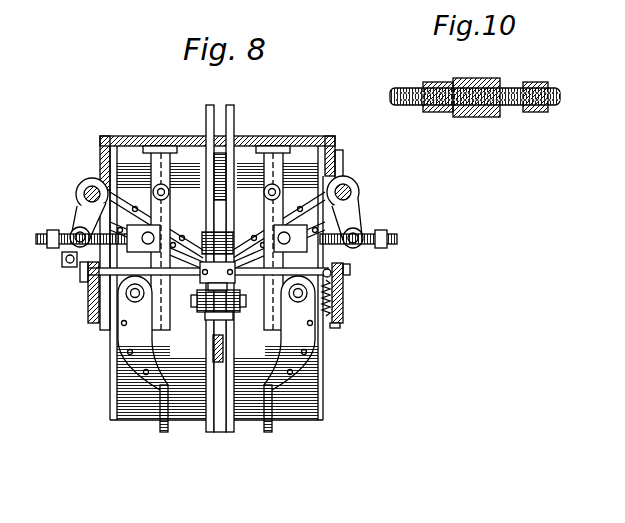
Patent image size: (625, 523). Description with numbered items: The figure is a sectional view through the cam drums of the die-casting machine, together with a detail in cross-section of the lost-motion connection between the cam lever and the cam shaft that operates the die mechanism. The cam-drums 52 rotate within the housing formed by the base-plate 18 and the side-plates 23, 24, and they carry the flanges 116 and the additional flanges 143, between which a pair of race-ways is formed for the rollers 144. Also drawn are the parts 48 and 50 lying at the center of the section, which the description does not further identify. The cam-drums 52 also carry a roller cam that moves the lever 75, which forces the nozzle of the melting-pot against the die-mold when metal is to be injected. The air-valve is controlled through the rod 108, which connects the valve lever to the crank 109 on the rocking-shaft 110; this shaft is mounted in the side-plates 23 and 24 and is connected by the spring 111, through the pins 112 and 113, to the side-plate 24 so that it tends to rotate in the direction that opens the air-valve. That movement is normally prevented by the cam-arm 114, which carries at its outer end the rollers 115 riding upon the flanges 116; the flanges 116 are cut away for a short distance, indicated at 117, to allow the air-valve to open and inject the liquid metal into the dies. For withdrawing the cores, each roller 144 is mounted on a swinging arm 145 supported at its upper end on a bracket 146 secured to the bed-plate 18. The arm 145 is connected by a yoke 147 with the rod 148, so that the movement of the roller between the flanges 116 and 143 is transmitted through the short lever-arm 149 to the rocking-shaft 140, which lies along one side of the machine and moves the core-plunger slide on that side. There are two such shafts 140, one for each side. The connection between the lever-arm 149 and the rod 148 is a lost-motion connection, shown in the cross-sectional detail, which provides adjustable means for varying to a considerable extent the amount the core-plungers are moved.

In FIG. 8, the base-plate 18 is at (334, 139).
In FIG. 8, the side-plate 23 is at (88, 315).
In FIG. 8, the side-plate 24 is at (341, 312).
In FIG. 8, the nut bracket 48 is at (240, 258).
In FIG. 8, the rods 50 is at (206, 112).
In FIG. 8, the cam-drum 52 is at (117, 388).
In FIG. 8, the lever 75 is at (211, 343).
In FIG. 8, the rod 108 is at (63, 262).
In FIG. 8, the crank 109 is at (82, 273).
In FIG. 8, the rocking-shaft 110 is at (346, 273).
In FIG. 8, the spring 111 is at (334, 292).
In FIG. 8, the pin 112 is at (344, 268).
In FIG. 8, the pin 113 is at (338, 328).
In FIG. 8, the cam-arm 114 is at (228, 287).
In FIG. 8, the rollers 115 is at (230, 318).
In FIG. 8, the flanges 116 is at (217, 432).
In FIG. 8, the cut-away portion 117 is at (200, 318).
In FIG. 8, the rocking-shaft 140 is at (90, 190).
In FIG. 8, the flanges 143 is at (164, 432).
In FIG. 8, the roller 144 is at (133, 309).
In FIG. 8, the swinging arm 145 is at (280, 221).
In FIG. 8, the bracket 146 is at (156, 157).
In FIG. 8, the yoke 147 is at (150, 226).
In FIG. 8, the rod 148 is at (47, 238).
In FIG. 10, the rod 148 is at (402, 88).
In FIG. 8, the lever-arm 149 is at (78, 207).
In FIG. 10, the lever-arm 149 is at (471, 117).